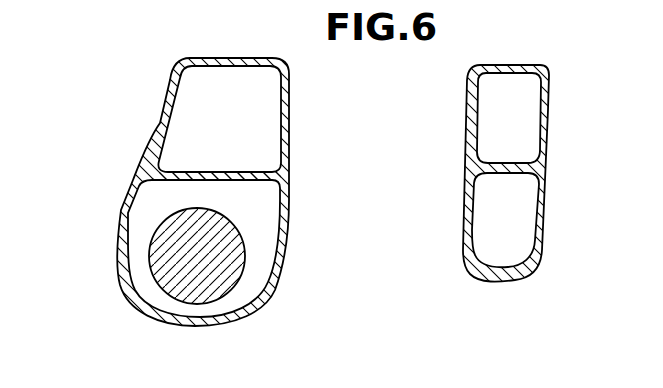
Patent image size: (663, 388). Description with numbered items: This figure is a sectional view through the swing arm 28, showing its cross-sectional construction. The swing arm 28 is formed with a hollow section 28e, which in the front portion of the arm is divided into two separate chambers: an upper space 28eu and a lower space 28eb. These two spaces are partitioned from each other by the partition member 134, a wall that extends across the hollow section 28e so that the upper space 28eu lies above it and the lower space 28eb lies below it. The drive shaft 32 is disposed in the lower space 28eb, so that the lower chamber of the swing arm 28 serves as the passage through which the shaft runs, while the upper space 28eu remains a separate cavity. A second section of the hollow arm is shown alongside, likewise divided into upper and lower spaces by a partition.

The swing arm 28 is at (462, 247).
The hollow section 28e is at (286, 191).
The upper space 28eu is at (288, 130).
The lower space 28eb is at (288, 202).
The partition member 134 is at (210, 168).
The drive shaft 32 is at (243, 283).